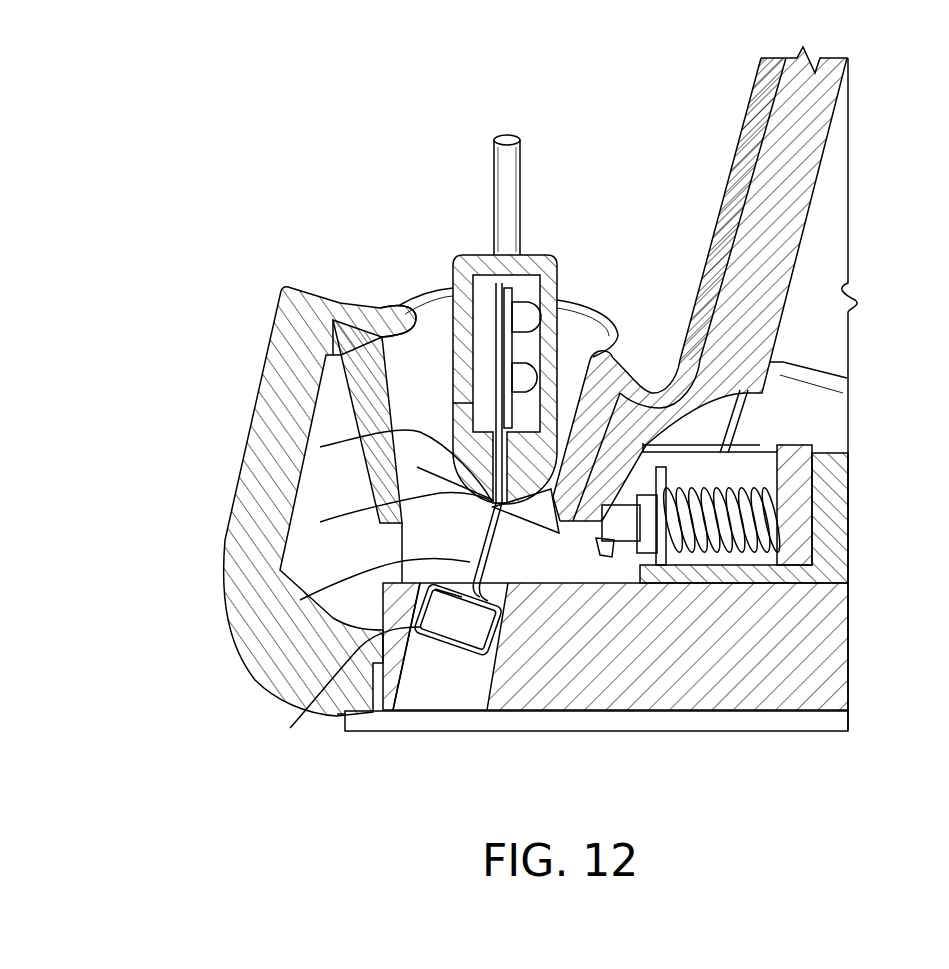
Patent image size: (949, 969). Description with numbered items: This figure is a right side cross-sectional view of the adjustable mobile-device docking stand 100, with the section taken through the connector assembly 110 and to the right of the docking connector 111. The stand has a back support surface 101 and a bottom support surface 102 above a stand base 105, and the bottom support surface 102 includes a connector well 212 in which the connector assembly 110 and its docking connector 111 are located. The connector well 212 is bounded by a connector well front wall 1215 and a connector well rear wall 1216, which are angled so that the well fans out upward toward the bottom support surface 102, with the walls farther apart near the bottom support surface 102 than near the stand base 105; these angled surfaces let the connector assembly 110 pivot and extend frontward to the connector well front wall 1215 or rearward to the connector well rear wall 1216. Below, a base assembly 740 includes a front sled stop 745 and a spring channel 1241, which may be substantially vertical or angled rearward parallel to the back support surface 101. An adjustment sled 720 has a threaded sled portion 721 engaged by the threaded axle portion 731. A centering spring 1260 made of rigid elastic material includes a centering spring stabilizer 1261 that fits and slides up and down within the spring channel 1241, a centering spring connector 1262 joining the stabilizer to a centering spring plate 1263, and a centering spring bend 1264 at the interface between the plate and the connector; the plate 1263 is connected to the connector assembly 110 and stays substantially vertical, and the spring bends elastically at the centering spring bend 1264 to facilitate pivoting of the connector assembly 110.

The adjustable mobile-device docking stand 100 is at (197, 237).
The back support surface 101 is at (748, 108).
The bottom support surface 102 is at (578, 315).
The stand base 105 is at (766, 732).
The connector assembly 110 is at (533, 257).
The docking connector 111 is at (508, 134).
The connector well 212 is at (431, 282).
The adjustment sled 720 is at (540, 570).
The threaded sled portion 721 is at (797, 480).
The threaded axle portion 731 is at (733, 487).
The base assembly 740 is at (603, 690).
The front sled stop 745 is at (665, 557).
The connector well front wall 1215 is at (398, 310).
The connector well rear wall 1216 is at (597, 367).
The spring channel 1241 is at (455, 695).
The centering spring 1260 is at (445, 653).
The centering spring stabilizer 1261 is at (290, 728).
The centering spring connector 1262 is at (300, 600).
The centering spring plate 1263 is at (320, 448).
The centering spring bend 1264 is at (320, 522).